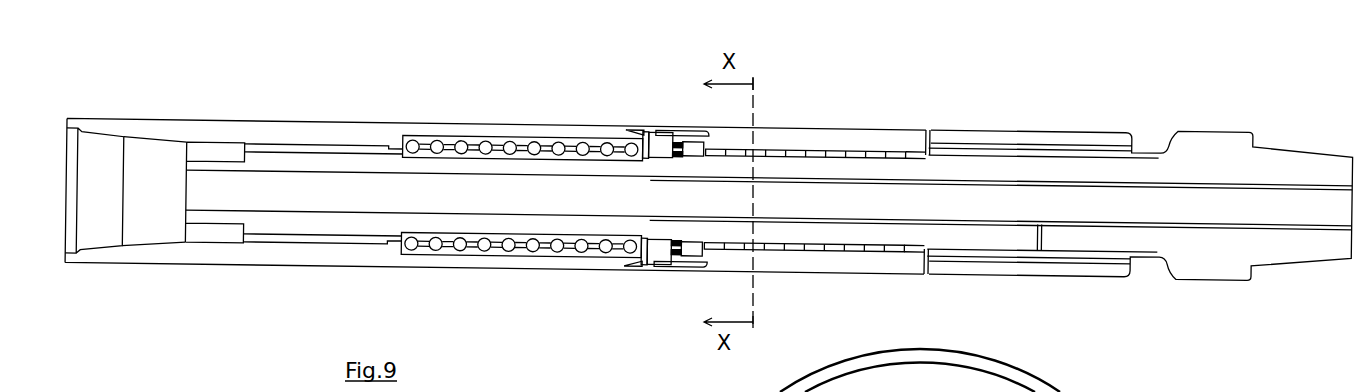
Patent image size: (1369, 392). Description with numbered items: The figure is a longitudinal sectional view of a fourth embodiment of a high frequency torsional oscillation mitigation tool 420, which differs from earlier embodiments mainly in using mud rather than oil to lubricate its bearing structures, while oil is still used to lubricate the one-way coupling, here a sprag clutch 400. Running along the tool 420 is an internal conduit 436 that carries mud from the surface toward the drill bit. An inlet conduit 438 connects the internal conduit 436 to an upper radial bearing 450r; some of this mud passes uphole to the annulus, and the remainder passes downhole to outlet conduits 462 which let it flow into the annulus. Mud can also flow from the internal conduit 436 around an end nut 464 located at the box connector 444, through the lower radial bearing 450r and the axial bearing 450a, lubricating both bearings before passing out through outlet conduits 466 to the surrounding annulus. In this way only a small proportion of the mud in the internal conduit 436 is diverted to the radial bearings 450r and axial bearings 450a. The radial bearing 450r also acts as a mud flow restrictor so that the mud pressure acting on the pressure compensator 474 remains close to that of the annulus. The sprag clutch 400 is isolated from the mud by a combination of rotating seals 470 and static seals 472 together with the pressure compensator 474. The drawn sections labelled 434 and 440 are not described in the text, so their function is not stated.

The sprag clutch 400 is at (796, 267).
The high frequency torsional oscillation mitigation tool 420 is at (244, 325).
The upper spline section 434 is at (819, 168).
The internal conduit 436 is at (1175, 225).
The inlet conduit 438 is at (1040, 242).
The lower spline section 440 is at (843, 262).
The box connector 444 is at (91, 248).
The axial bearing 450a is at (480, 124).
The radial bearing 450r is at (318, 150).
The outlet conduits 462 is at (932, 132).
The end nut 464 is at (215, 152).
The outlet conduits 466 is at (630, 275).
The rotating seals 470 is at (670, 160).
The static seals 472 is at (678, 145).
The pressure compensator 474 is at (687, 256).